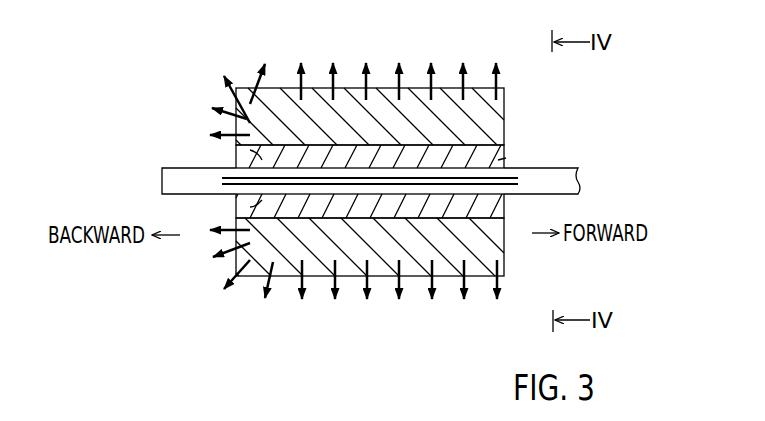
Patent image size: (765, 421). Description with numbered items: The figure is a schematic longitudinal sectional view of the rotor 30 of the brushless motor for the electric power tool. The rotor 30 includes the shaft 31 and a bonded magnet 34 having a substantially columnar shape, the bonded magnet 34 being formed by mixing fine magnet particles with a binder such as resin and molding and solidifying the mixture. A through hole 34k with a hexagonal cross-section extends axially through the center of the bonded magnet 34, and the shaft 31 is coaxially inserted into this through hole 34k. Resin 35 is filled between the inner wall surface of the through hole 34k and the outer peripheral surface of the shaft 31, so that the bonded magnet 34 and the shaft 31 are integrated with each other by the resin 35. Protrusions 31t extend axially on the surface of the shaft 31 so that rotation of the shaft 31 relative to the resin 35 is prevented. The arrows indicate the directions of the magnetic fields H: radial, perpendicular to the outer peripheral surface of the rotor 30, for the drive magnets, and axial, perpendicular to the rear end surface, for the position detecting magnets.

The rotor 30 is at (446, 62).
The shaft 31 is at (545, 178).
The protrusions 31t is at (262, 200).
The bonded magnet 34 is at (290, 113).
The through hole 34k is at (262, 160).
The resin 35 is at (506, 158).
The magnetic fields H is at (338, 78).